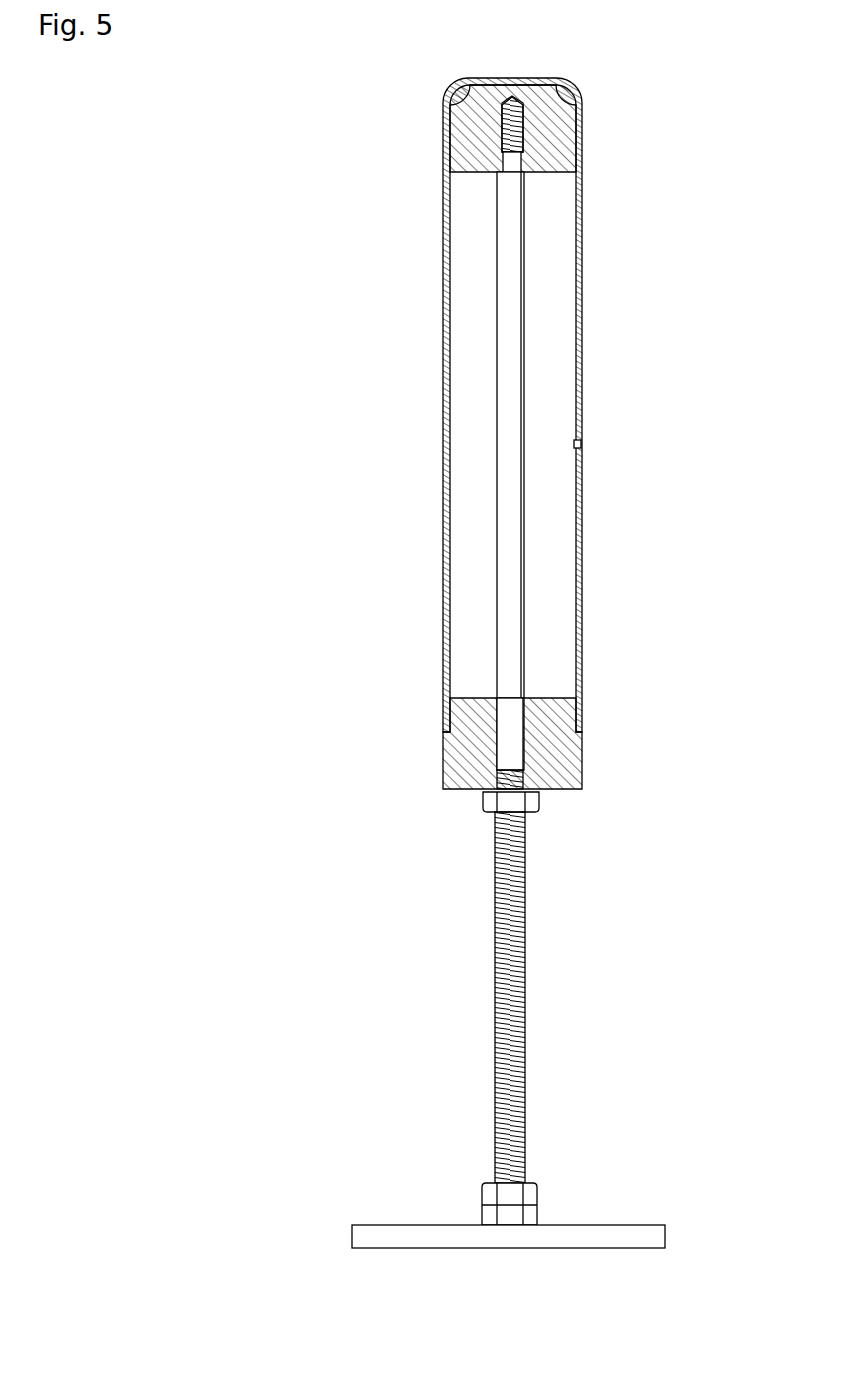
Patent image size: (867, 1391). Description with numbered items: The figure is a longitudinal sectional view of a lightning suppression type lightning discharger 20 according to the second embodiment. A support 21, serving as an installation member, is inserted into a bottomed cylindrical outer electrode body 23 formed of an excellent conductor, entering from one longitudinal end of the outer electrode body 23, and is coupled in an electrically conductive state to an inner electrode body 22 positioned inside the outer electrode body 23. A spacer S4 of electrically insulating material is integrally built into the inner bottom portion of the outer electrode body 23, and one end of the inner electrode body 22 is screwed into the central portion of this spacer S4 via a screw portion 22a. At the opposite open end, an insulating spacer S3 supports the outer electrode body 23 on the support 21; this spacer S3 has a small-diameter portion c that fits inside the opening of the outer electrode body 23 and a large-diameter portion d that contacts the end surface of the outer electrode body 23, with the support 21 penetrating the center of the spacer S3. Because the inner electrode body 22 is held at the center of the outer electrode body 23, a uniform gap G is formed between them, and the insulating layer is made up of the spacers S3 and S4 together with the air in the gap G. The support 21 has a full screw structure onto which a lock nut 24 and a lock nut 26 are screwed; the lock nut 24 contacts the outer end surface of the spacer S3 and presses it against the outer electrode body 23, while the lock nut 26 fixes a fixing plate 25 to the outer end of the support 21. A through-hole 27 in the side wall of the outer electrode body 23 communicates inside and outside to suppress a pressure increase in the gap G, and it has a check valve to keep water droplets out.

The lightning discharger 20 is at (597, 533).
The support 21 is at (525, 935).
The inner electrode body 22 is at (505, 380).
The screw portion 22a is at (448, 142).
The outer electrode body 23 is at (582, 310).
The lock nut 24 is at (540, 805).
The fixing plate 25 is at (422, 1225).
The lock nut 26 is at (540, 1215).
The through-hole 27 is at (582, 444).
The spacer S3 is at (470, 792).
The spacer S4 is at (582, 162).
The gap G is at (560, 247).
The small-diameter portion c is at (582, 717).
The large-diameter portion d is at (582, 775).